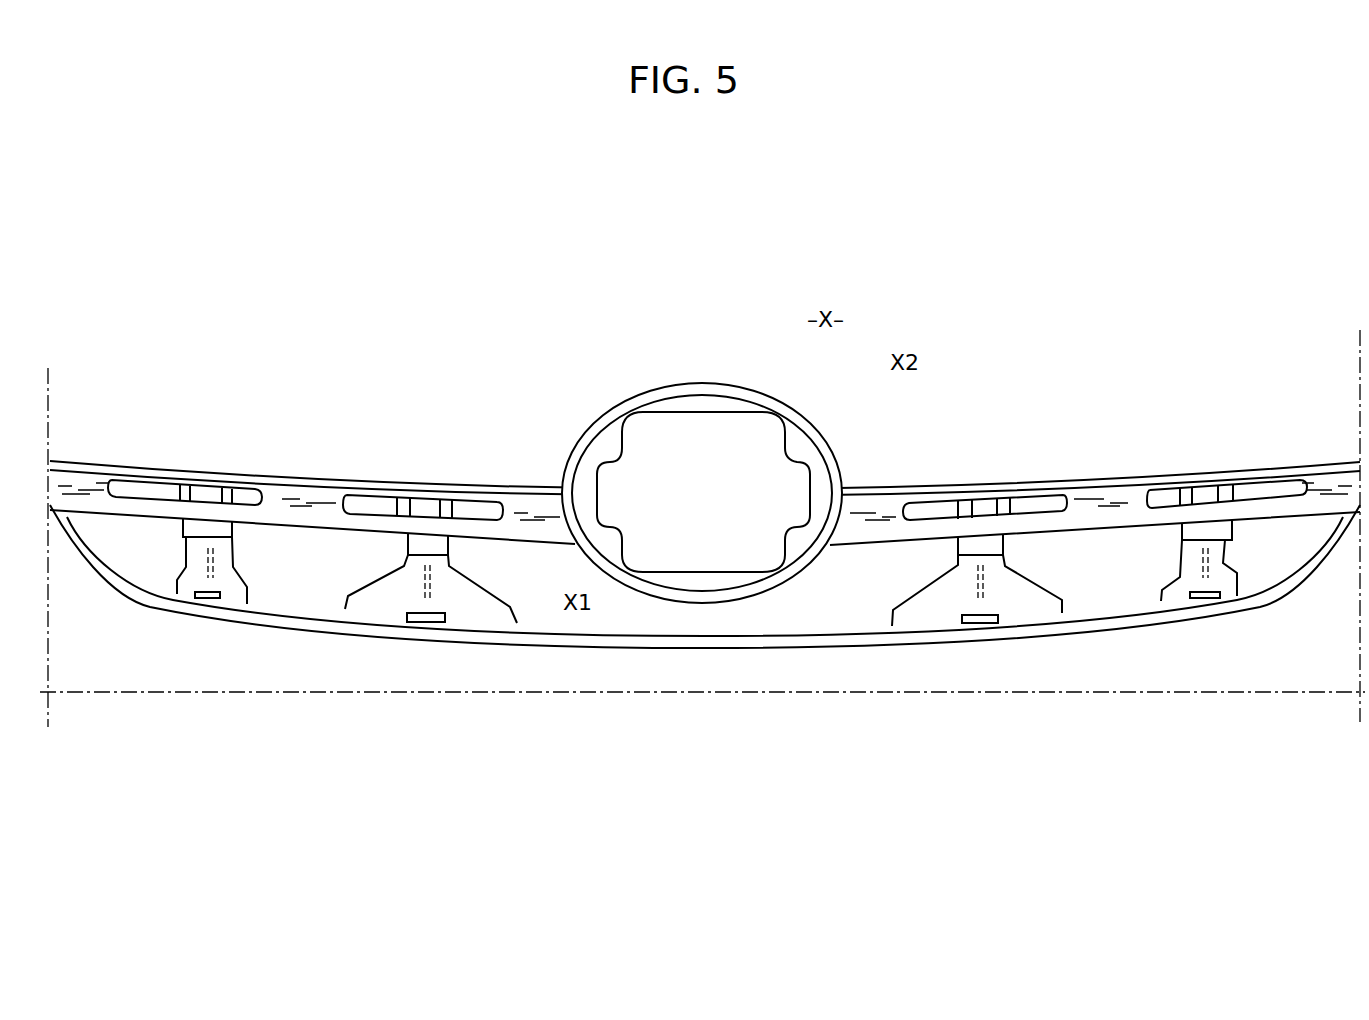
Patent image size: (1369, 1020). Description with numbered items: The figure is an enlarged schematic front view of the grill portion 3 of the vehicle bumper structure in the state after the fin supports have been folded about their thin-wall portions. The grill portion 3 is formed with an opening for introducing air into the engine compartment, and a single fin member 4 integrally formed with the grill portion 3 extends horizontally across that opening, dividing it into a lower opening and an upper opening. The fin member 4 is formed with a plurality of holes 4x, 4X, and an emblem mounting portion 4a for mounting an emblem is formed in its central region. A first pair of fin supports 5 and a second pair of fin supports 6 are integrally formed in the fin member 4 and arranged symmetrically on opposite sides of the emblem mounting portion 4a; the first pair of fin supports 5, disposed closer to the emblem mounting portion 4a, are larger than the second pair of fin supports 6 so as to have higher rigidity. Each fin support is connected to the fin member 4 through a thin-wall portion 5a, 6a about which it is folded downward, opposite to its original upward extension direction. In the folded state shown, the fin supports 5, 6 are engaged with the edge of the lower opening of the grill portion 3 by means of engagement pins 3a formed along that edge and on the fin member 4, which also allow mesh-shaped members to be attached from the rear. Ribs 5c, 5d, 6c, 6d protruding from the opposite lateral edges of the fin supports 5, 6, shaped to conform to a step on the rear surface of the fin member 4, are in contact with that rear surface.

The grill portion 3 is at (234, 281).
The engagement pin 3a is at (205, 597).
The fin member 4 is at (513, 471).
The emblem mounting portion 4a is at (695, 388).
The hole 4X is at (358, 507).
The hole 4x is at (152, 495).
The first pair of fin supports 5 is at (475, 638).
The thin-wall portion 5a is at (410, 470).
The rib 5c is at (450, 547).
The rib 5d is at (402, 560).
The second pair of fin supports 6 is at (246, 620).
The thin-wall portion 6a is at (208, 470).
The rib 6c is at (232, 537).
The rib 6d is at (187, 537).